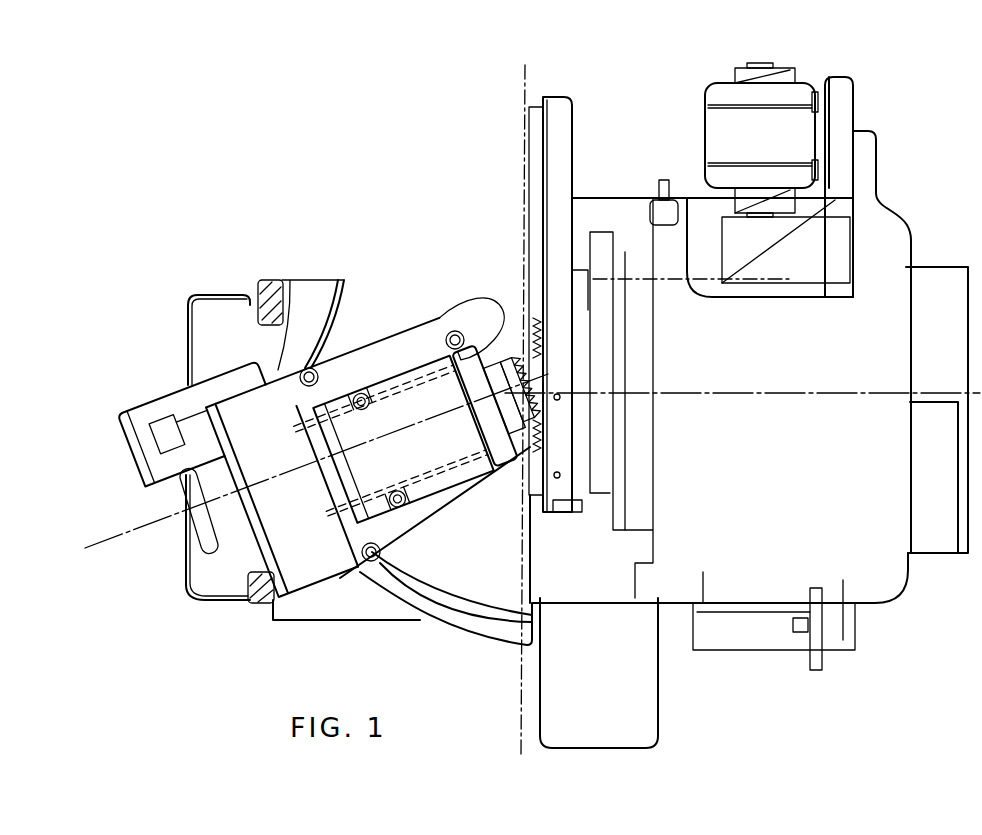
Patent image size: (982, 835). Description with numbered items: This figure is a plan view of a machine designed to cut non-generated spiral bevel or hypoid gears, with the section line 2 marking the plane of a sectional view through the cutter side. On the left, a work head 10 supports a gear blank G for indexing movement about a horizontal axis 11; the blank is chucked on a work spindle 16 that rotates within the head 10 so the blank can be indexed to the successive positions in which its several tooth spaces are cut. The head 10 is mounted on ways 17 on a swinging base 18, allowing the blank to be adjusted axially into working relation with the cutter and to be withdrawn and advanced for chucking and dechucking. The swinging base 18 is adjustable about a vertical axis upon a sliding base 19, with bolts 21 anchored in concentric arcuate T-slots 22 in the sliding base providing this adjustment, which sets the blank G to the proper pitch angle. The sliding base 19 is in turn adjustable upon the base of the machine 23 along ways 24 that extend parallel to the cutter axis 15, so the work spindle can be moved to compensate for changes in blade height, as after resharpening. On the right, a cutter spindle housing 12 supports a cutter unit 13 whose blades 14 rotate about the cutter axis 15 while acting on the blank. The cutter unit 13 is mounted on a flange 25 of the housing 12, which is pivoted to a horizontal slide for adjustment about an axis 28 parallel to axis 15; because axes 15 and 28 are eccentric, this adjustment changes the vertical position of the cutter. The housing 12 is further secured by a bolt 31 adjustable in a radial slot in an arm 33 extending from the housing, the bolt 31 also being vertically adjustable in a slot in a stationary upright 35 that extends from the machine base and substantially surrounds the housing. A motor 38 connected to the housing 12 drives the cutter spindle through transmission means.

The section line 2- 2 is at (505, 62).
The work head 10 is at (416, 434).
The horizontal axis 11 is at (141, 540).
The cutter spindle housing 12 is at (617, 530).
The cutter unit 13 is at (573, 170).
The blades 14 is at (543, 333).
The cutter axis 15 is at (766, 396).
The work spindle 16 is at (482, 374).
The ways 17 is at (436, 452).
The swinging base 18 is at (357, 386).
The sliding base 19 is at (392, 329).
The bolts 21 is at (318, 369).
The arcuate T-slots 22 is at (330, 312).
The base of the machine 23 is at (208, 337).
The ways 24 is at (272, 286).
The flange 25 is at (573, 511).
The axis 28 is at (768, 277).
The bolt 31 is at (798, 632).
The arm 33 is at (822, 660).
The stationary upright 35 is at (792, 554).
The motor 38 is at (734, 138).
The gear blank G is at (527, 375).